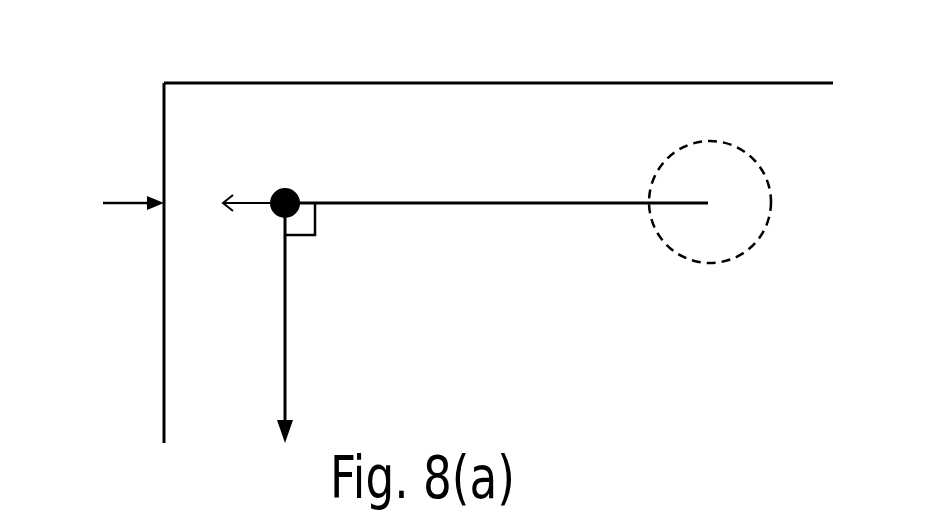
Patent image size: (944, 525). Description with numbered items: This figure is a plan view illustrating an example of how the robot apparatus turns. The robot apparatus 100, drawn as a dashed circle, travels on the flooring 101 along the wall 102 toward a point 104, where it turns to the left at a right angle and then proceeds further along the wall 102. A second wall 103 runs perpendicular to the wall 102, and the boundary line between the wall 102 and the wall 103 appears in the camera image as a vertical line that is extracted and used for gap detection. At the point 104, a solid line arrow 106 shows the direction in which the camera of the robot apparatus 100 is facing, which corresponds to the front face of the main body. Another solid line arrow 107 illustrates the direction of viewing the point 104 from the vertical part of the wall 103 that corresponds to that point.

The robot apparatus 100 is at (745, 187).
The flooring 101 is at (465, 355).
The wall 102 is at (530, 82).
The wall 103 is at (157, 323).
The point 104 is at (299, 196).
The solid line arrow 106 is at (253, 207).
The solid line arrow 107 is at (127, 205).